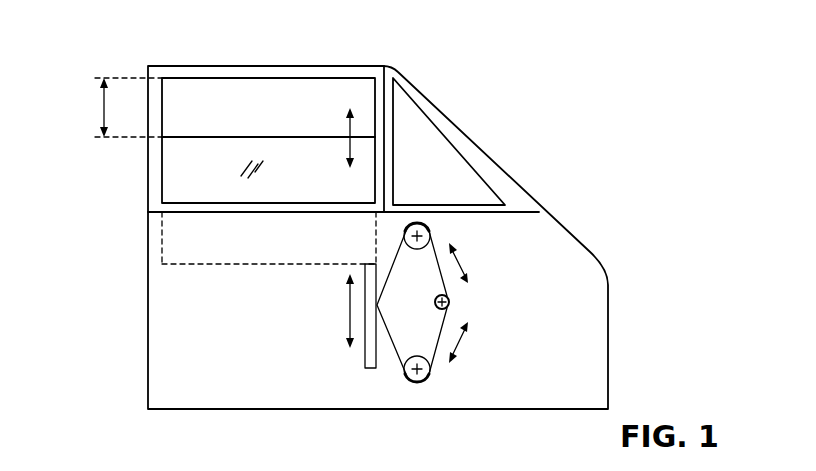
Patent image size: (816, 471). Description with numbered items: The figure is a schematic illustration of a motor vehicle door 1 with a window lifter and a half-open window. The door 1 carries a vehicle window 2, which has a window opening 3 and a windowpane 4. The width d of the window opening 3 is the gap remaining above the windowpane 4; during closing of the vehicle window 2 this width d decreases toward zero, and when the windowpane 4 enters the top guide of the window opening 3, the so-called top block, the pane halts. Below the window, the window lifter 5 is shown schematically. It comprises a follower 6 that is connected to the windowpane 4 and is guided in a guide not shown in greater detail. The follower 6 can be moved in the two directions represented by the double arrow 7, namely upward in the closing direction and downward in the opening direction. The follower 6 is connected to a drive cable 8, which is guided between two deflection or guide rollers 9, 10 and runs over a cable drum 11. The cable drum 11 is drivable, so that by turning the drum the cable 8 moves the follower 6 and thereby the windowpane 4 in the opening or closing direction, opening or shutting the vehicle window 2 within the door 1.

The motor vehicle door 1 is at (586, 244).
The vehicle window 2 is at (309, 54).
The window opening 3 is at (263, 90).
The windowpane 4 is at (187, 150).
The window lifter 5 is at (500, 315).
The follower 6 is at (365, 361).
The double arrow 7 is at (350, 311).
The drive cable 8 is at (399, 361).
The deflection roller 9 is at (413, 224).
The deflection roller 10 is at (415, 381).
The cable drum 11 is at (449, 297).
The width of window opening d is at (104, 107).